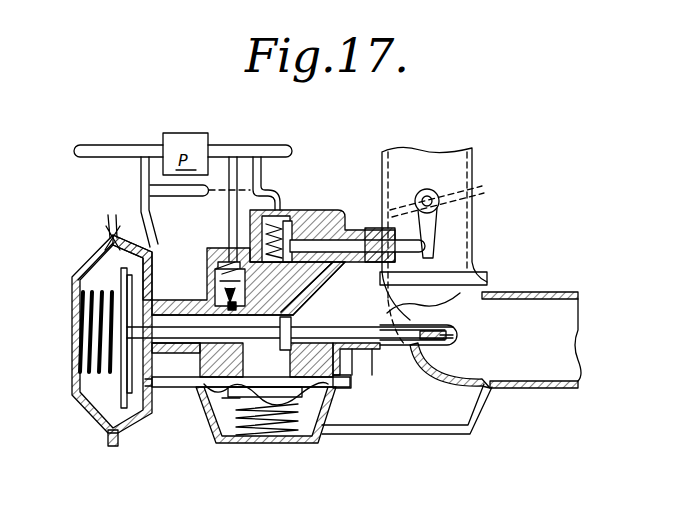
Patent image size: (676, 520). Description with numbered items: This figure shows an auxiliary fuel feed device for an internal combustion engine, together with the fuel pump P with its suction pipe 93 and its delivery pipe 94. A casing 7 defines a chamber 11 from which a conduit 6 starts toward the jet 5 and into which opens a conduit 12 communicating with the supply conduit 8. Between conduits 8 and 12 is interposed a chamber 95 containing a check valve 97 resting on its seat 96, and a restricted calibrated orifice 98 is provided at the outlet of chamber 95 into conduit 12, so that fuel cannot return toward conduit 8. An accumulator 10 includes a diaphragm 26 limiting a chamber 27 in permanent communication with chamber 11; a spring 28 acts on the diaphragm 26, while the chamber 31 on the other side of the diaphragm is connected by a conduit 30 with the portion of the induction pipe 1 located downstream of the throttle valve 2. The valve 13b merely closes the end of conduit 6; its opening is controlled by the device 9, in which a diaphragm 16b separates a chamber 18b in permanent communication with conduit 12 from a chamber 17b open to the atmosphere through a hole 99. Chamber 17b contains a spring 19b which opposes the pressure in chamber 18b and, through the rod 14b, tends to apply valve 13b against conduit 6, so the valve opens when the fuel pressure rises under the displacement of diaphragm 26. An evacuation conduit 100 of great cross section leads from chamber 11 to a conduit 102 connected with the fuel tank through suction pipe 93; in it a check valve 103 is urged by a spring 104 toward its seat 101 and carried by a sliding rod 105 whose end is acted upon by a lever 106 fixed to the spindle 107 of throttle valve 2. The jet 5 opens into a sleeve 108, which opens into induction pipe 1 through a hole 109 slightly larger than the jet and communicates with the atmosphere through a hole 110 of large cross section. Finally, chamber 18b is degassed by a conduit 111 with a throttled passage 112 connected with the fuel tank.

The induction pipe 1 is at (551, 340).
The throttle valve 2 is at (472, 193).
The jet 5 is at (445, 330).
The conduit 6 is at (350, 345).
The casing 7 is at (222, 250).
The conduit 8 is at (229, 213).
The device 9 is at (92, 410).
The accumulator 10 is at (310, 442).
The chamber 11 is at (268, 369).
The conduit 12 is at (187, 340).
The valve 13b is at (292, 330).
The rod 14b is at (185, 381).
The diaphragm 16b is at (118, 437).
The chamber 17b is at (102, 266).
The chamber 18b is at (146, 262).
The spring 19b is at (82, 360).
The diaphragm 26 is at (226, 400).
The chamber 27 is at (215, 389).
The spring 28 is at (262, 425).
The conduit 30 is at (412, 434).
The chamber 31 is at (320, 405).
The suction pipe 93 is at (100, 151).
The delivery pipe 94 is at (255, 151).
The chamber 95 is at (300, 305).
The seat 96 is at (218, 270).
The check valve 97 is at (232, 281).
The restricted calibrated orifice 98 is at (228, 296).
The hole 99 is at (78, 328).
The evacuation conduit 100 is at (300, 292).
The seat 101 is at (330, 212).
The conduit 102 is at (146, 178).
The check valve 103 is at (290, 226).
The spring 104 is at (272, 222).
The sliding rod 105 is at (345, 240).
The lever 106 is at (432, 240).
The spindle 107 is at (426, 190).
The sleeve 108 is at (420, 340).
The hole 109 is at (453, 338).
The hole 110 is at (373, 352).
The conduit 111 is at (143, 208).
The throttled passage 112 is at (110, 226).